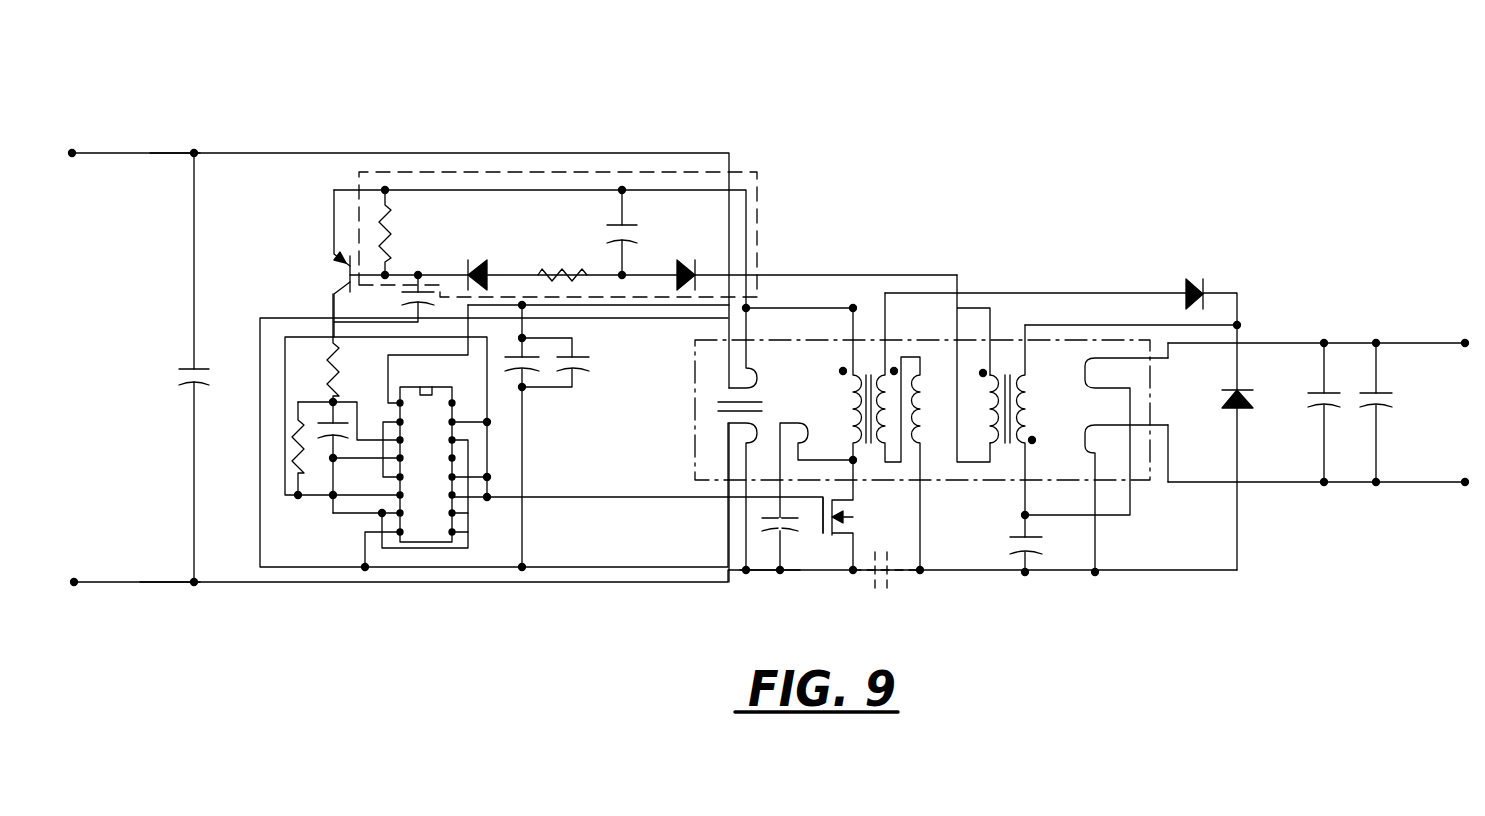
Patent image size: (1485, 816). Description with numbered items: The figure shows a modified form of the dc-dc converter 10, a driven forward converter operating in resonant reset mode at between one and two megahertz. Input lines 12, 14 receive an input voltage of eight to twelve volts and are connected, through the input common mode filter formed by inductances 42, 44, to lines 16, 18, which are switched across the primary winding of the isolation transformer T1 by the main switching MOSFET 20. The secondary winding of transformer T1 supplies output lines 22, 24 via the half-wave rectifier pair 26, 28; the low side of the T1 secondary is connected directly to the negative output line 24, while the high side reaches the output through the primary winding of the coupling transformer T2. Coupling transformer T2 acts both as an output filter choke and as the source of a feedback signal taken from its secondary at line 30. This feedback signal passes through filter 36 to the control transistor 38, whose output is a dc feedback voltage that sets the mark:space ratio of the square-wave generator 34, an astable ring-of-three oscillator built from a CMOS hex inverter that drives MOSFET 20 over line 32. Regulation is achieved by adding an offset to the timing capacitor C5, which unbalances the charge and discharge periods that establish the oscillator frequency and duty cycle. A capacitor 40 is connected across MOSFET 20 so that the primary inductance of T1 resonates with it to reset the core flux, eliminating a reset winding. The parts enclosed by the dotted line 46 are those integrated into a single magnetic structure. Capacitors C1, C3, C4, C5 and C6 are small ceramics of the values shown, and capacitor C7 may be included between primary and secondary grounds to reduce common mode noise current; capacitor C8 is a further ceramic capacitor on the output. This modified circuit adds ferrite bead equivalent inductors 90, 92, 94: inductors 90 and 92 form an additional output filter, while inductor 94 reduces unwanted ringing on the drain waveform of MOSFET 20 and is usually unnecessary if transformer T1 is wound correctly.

The converter 10 is at (876, 101).
The input line 12 is at (159, 150).
The input line 14 is at (160, 585).
The line 16 is at (803, 307).
The line 18 is at (765, 573).
The MOSFET 20 is at (857, 517).
The output line 22 is at (1292, 343).
The negative output line 24 is at (1352, 484).
The rectifier 26 is at (1185, 285).
The rectifier 28 is at (1228, 418).
The feedback line 30 is at (905, 293).
The control line 32 is at (630, 497).
The square-wave generator 34 is at (248, 474).
The filter 36 is at (535, 172).
The control transistor 38 is at (346, 272).
The capacitor 40 is at (745, 534).
The inductance 42 is at (725, 383).
The inductance 44 is at (728, 435).
The dotted line 46 is at (1008, 339).
The ferrite bead equivalent inductor 90 is at (1096, 429).
The ferrite bead equivalent inductor 92 is at (1126, 500).
The ferrite bead equivalent inductor 94 is at (870, 385).
The capacitor C1 is at (154, 367).
The capacitor C3 is at (598, 436).
The capacitor C4 is at (593, 367).
The timing capacitor C5 is at (331, 425).
The capacitor C6 is at (1304, 413).
The capacitor C7 is at (905, 592).
The output capacitor C8 is at (1404, 413).
The isolation transformer T1 is at (871, 433).
The coupling transformer T2 is at (1018, 448).